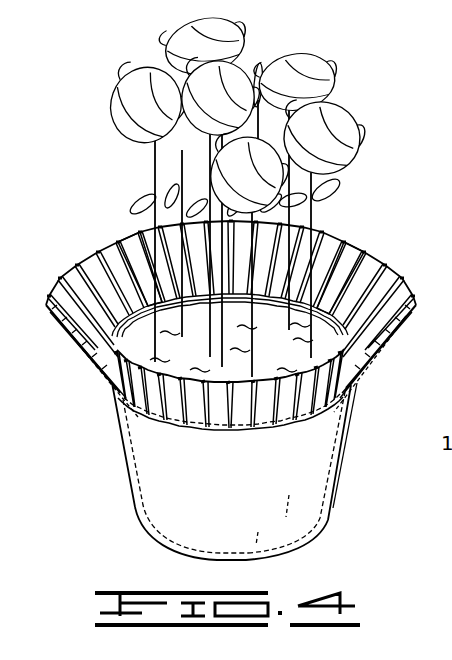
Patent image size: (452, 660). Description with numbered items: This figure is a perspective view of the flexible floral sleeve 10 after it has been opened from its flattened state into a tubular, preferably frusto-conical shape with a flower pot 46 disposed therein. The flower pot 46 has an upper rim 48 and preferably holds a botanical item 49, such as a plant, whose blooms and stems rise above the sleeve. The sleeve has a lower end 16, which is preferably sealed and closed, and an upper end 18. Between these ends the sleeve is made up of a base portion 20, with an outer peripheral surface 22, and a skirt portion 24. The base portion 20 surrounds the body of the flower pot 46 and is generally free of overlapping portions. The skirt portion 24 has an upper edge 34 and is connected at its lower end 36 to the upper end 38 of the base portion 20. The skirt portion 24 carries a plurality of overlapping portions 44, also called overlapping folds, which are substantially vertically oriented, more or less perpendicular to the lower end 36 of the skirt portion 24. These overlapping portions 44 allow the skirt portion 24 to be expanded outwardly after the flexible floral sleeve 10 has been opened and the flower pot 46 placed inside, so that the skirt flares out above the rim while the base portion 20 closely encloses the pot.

The flexible floral sleeve 10 is at (93, 470).
The lower end 16 is at (293, 548).
The upper end 18 is at (70, 263).
The base portion 20 is at (333, 483).
The outer peripheral surface 22 is at (301, 468).
The skirt portion 24 is at (336, 228).
The upper edge 34 is at (115, 240).
The lower end of skirt portion 36 is at (152, 416).
The upper end of base portion 38 is at (328, 412).
The overlapping portions 44 is at (130, 230).
The flower pot 46 is at (138, 481).
The upper rim 48 is at (359, 252).
The botanical item 49 is at (309, 53).